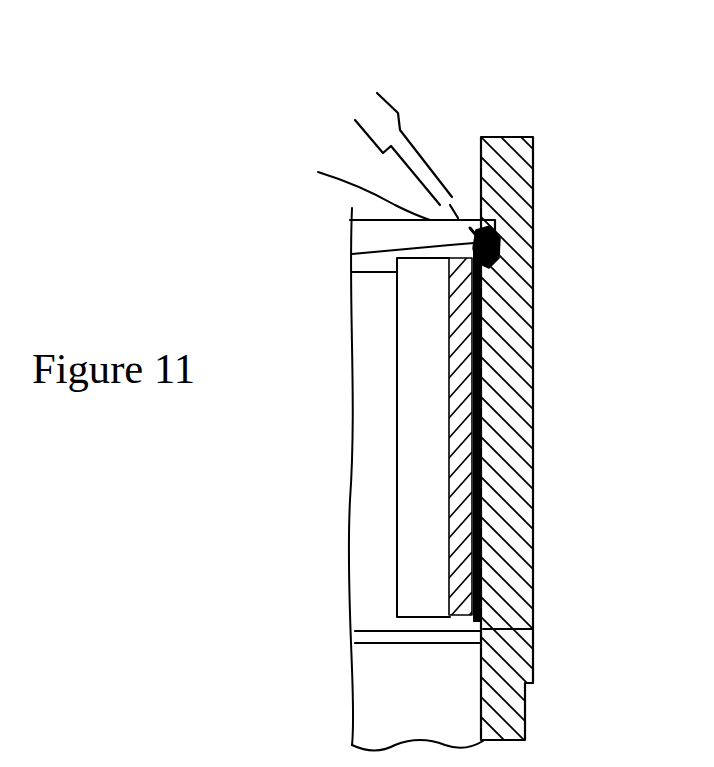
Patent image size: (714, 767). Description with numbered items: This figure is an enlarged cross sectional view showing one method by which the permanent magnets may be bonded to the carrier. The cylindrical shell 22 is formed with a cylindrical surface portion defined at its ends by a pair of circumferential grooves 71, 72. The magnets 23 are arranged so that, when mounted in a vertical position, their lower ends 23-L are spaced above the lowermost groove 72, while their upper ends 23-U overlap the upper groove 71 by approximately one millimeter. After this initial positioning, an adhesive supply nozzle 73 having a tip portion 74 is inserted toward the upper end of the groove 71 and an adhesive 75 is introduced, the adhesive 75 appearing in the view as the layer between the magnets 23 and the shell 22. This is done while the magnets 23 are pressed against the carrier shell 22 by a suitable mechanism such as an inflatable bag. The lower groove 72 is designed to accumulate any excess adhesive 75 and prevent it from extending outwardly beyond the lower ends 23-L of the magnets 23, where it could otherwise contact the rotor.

The cylindrical shell 22 is at (533, 402).
The magnets 23 is at (397, 486).
The upper ends of the magnets 23-U is at (352, 254).
The lower ends of the magnets 23-L is at (482, 628).
The circumferential groove 71 is at (533, 240).
The circumferential groove 72 is at (533, 630).
The adhesive supply nozzle 73 is at (400, 113).
The tip portion 74 is at (436, 174).
The adhesive 75 is at (493, 274).